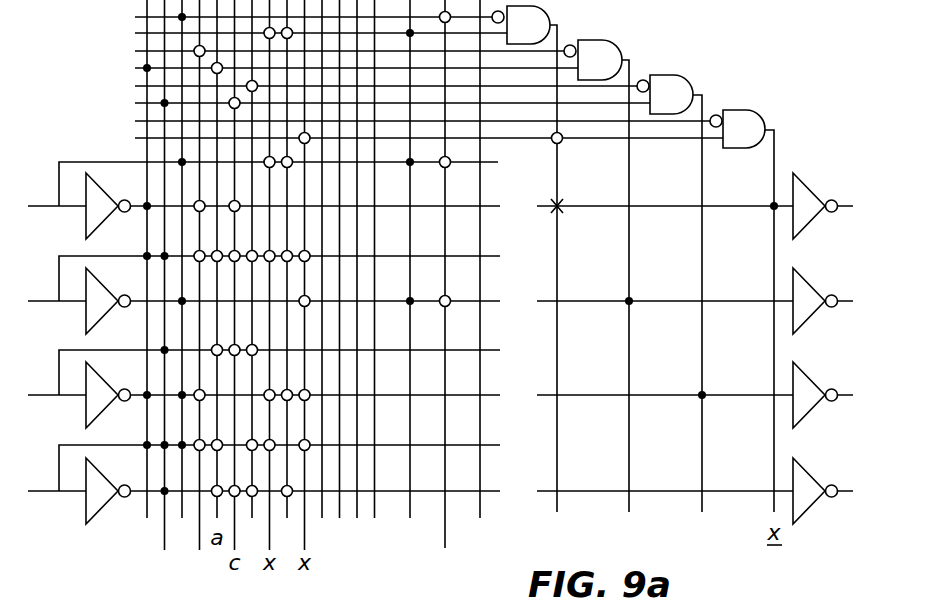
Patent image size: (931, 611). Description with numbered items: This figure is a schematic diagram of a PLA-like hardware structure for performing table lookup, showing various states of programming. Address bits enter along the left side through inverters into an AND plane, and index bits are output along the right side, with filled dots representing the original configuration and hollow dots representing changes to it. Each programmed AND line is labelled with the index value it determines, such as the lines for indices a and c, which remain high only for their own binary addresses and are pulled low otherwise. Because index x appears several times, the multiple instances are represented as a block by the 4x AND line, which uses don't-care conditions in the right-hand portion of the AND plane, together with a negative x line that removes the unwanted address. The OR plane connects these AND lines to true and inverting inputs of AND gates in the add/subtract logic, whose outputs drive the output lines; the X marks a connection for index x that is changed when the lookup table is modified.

The "4x" AND line 4x is at (410, 275).